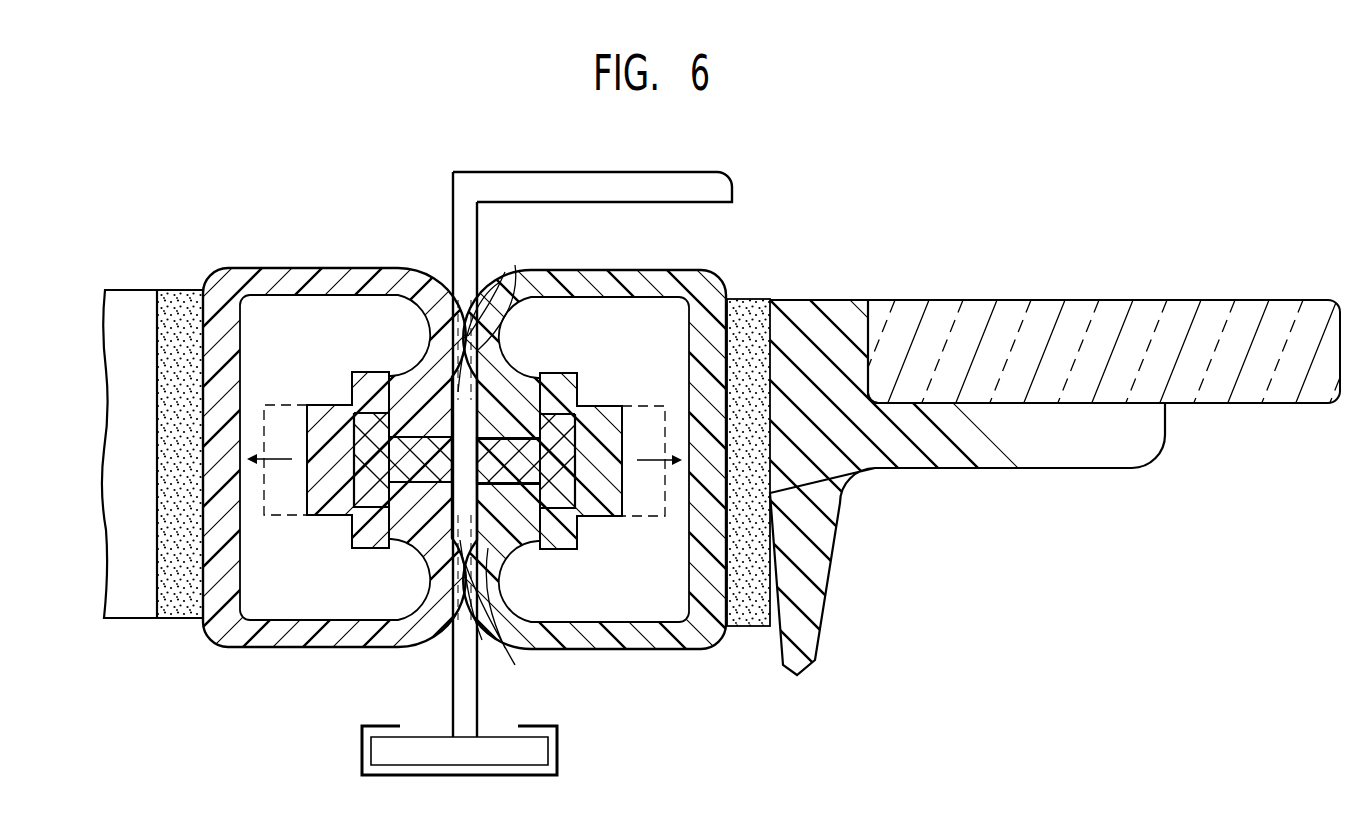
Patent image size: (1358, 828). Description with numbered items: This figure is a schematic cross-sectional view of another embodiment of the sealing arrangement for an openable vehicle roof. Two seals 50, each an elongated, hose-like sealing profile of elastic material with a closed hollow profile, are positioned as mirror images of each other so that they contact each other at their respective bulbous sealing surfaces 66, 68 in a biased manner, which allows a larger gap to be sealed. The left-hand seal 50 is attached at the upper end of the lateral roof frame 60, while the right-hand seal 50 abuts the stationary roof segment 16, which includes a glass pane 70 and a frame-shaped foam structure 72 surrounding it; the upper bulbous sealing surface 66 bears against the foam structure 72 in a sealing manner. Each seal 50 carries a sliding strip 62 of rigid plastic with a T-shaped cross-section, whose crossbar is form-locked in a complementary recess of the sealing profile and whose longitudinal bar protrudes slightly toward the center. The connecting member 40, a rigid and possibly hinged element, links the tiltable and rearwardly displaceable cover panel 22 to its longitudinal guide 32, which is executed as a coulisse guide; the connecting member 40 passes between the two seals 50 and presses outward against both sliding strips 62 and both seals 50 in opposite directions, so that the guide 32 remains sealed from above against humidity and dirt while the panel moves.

The stationary roof segment 16 is at (1151, 478).
The cover panel 22 is at (626, 190).
The longitudinal guide 32 is at (560, 752).
The connecting member 40 is at (453, 672).
The seal 50 is at (262, 255).
The lateral roof frame 60 is at (118, 441).
The sliding strip 62 is at (362, 372).
The upper bulbous sealing surface 66 is at (510, 270).
The lower bulbous sealing surface 68 is at (503, 655).
The glass pane 70 is at (1135, 325).
The frame-shaped foam structure 72 is at (1016, 447).